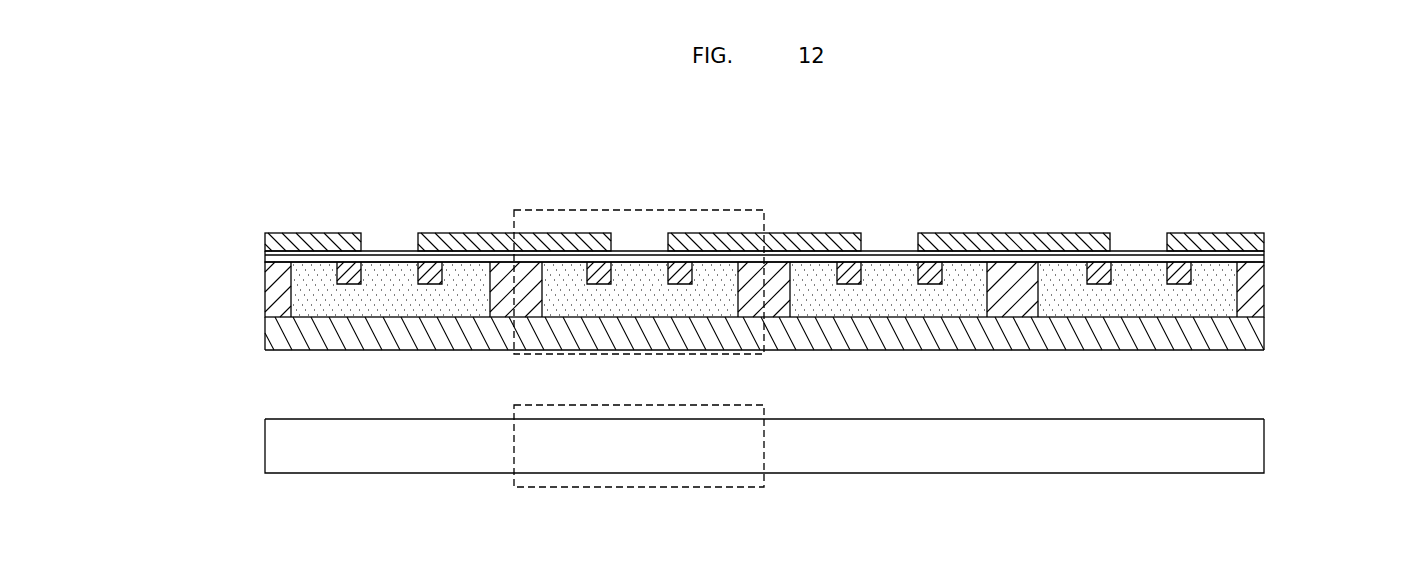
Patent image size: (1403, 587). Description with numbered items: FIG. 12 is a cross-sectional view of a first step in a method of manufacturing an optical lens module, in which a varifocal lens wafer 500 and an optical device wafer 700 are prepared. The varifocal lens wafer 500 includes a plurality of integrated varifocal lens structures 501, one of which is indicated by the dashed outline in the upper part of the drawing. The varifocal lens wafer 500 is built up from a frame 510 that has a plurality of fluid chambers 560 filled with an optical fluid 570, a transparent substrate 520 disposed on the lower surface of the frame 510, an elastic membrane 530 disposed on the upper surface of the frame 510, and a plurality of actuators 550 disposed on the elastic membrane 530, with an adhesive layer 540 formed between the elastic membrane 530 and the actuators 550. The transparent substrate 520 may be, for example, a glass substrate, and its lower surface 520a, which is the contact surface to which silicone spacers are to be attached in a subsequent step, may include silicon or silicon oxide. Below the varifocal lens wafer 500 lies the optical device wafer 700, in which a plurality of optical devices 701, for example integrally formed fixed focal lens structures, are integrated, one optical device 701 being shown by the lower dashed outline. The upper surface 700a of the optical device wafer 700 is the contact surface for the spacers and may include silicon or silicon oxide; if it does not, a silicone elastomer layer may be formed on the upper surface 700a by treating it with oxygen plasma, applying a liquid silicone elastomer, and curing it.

The varifocal lens wafer 500 is at (262, 216).
The varifocal lens structure 501 is at (696, 202).
The frame 510 is at (1264, 290).
The transparent substrate 520 is at (1264, 334).
The lower surface of the transparent substrate 520a is at (1237, 350).
The elastic membrane 530 is at (1264, 259).
The adhesive layer 540 is at (1264, 253).
The actuator 550 is at (1264, 241).
The fluid chamber 560 is at (1160, 310).
The optical fluid 570 is at (1204, 305).
The optical device wafer 700 is at (267, 445).
The upper surface of the optical device wafer 700a is at (335, 419).
The optical device 701 is at (698, 500).